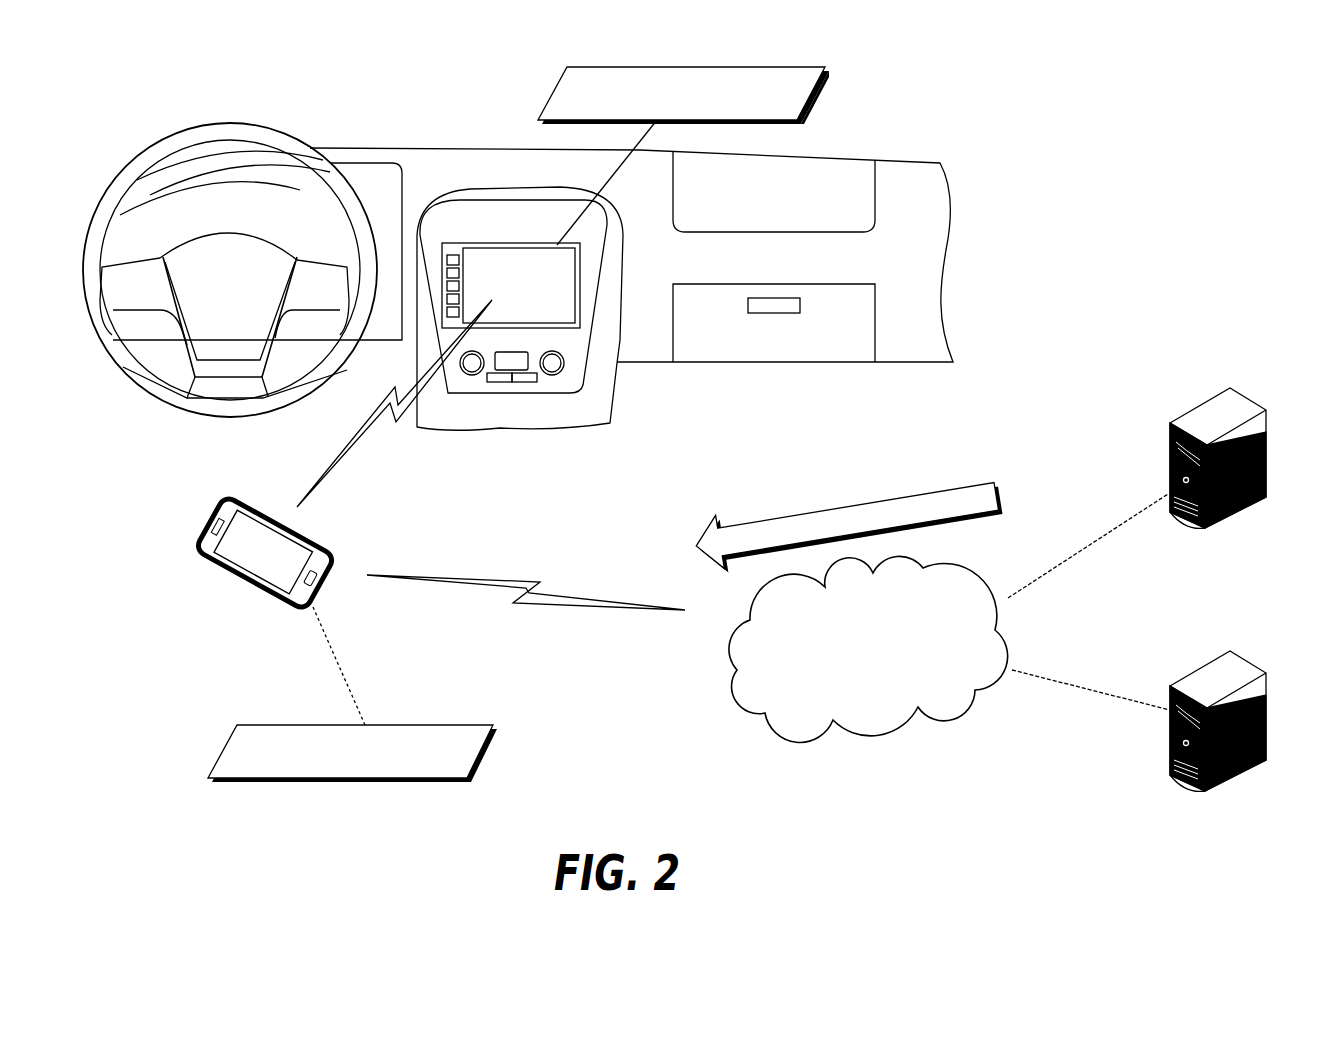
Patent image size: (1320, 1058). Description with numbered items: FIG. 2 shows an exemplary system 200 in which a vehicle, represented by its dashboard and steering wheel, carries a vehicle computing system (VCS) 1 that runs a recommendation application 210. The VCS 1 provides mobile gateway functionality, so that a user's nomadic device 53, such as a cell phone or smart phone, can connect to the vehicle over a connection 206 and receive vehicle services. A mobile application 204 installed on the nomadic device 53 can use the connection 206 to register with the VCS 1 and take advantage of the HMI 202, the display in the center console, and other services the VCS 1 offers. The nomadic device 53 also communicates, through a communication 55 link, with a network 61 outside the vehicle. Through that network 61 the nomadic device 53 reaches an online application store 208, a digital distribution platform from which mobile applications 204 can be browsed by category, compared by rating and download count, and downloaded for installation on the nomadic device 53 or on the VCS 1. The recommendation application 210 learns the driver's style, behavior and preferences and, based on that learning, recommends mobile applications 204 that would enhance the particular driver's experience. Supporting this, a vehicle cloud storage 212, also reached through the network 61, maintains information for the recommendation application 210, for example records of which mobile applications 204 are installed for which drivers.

The vehicle computing system (VCS) 1 is at (455, 243).
The system 200 is at (1128, 122).
The HMI 202 is at (515, 268).
The recommendation application 210 is at (742, 62).
The connection 206 is at (397, 417).
The nomadic device 53 is at (244, 589).
The mobile application 204 is at (413, 725).
The communication 55 is at (528, 606).
The network 61 is at (945, 712).
The application store 208 is at (1137, 496).
The vehicle cloud storage 212 is at (1141, 760).